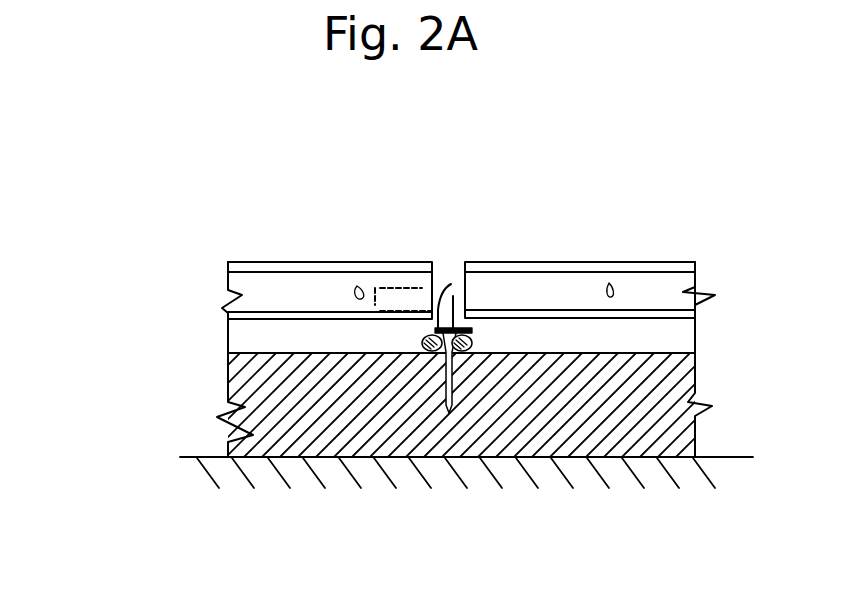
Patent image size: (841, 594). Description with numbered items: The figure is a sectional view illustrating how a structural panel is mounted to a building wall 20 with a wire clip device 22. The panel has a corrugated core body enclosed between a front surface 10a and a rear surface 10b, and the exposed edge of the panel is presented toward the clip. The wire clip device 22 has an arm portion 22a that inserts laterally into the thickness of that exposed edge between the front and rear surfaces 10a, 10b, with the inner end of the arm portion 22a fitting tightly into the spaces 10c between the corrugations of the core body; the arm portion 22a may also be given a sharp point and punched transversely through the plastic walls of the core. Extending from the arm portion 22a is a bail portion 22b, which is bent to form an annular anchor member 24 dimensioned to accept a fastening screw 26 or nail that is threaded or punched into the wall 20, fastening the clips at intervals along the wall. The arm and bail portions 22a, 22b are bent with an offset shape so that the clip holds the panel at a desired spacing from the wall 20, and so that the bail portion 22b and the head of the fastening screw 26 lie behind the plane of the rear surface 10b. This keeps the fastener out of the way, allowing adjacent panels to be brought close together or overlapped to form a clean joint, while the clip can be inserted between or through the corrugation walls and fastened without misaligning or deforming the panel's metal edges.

The front surface 10a is at (276, 262).
The rear surface 10b is at (248, 325).
The spaces between corrugations 10c is at (357, 286).
The wall 20 is at (168, 501).
The wire clip device 22 is at (460, 287).
The arm portion 22a is at (400, 296).
The bail portion 22b is at (472, 340).
The annular anchor member 24 is at (227, 425).
The fastening screw 26 is at (435, 329).